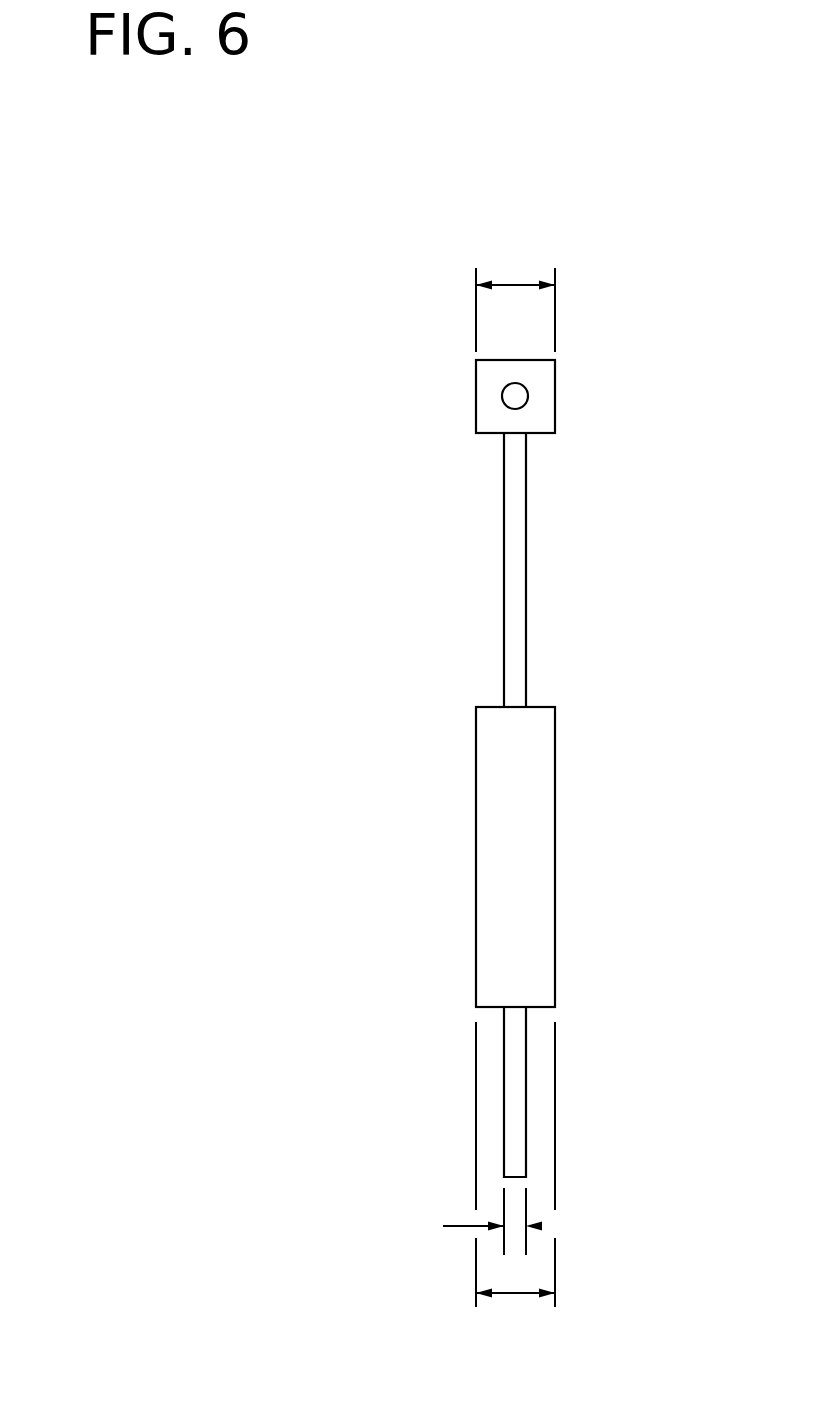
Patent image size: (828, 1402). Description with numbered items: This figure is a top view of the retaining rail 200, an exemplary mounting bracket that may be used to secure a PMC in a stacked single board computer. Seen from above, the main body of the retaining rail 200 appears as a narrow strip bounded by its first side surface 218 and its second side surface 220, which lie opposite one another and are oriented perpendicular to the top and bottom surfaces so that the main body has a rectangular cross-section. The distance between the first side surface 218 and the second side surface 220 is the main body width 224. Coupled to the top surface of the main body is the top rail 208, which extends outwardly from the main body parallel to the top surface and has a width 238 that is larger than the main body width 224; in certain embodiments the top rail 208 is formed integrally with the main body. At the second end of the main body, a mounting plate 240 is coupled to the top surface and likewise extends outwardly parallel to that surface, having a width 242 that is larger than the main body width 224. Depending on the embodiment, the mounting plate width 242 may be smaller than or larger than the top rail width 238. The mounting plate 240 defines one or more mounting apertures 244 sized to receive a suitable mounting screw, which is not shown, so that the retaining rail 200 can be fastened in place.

The retaining rail 200 is at (236, 316).
The top rail 208 is at (530, 854).
The first side surface 218 is at (527, 542).
The second side surface 220 is at (503, 1075).
The width 224 is at (526, 1226).
The width 238 is at (512, 1297).
The mounting plate 240 is at (528, 357).
The width 242 is at (513, 283).
The mounting apertures 244 is at (512, 393).